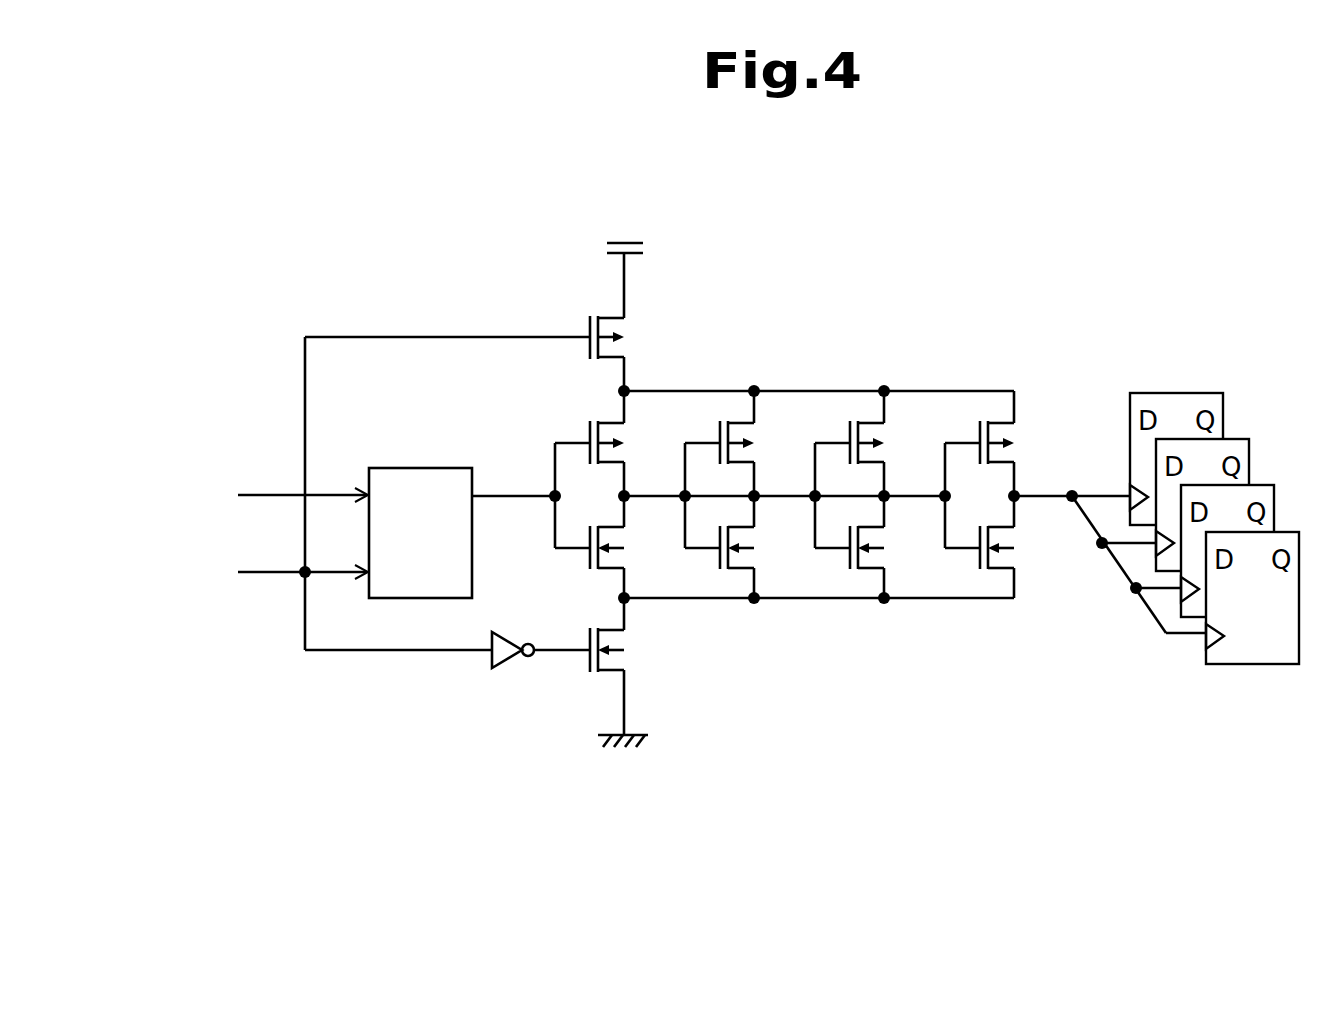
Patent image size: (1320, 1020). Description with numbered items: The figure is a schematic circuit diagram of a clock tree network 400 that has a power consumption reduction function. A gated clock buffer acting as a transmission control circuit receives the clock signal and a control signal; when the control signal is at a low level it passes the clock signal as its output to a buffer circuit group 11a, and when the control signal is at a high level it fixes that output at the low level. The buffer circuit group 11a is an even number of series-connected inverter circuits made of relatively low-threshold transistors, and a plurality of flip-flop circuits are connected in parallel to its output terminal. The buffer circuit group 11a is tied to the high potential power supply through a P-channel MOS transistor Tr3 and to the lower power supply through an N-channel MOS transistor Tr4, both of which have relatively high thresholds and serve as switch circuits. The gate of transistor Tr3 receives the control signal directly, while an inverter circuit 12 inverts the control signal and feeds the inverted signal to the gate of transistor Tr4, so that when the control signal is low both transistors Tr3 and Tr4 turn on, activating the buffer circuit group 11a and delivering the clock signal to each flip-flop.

The clock tree network 400 is at (512, 237).
The buffer circuit group 11a is at (912, 378).
The inverter circuit 12 is at (510, 669).
The P-channel MOS transistor Tr3 is at (612, 351).
The N-channel MOS transistor Tr4 is at (612, 664).